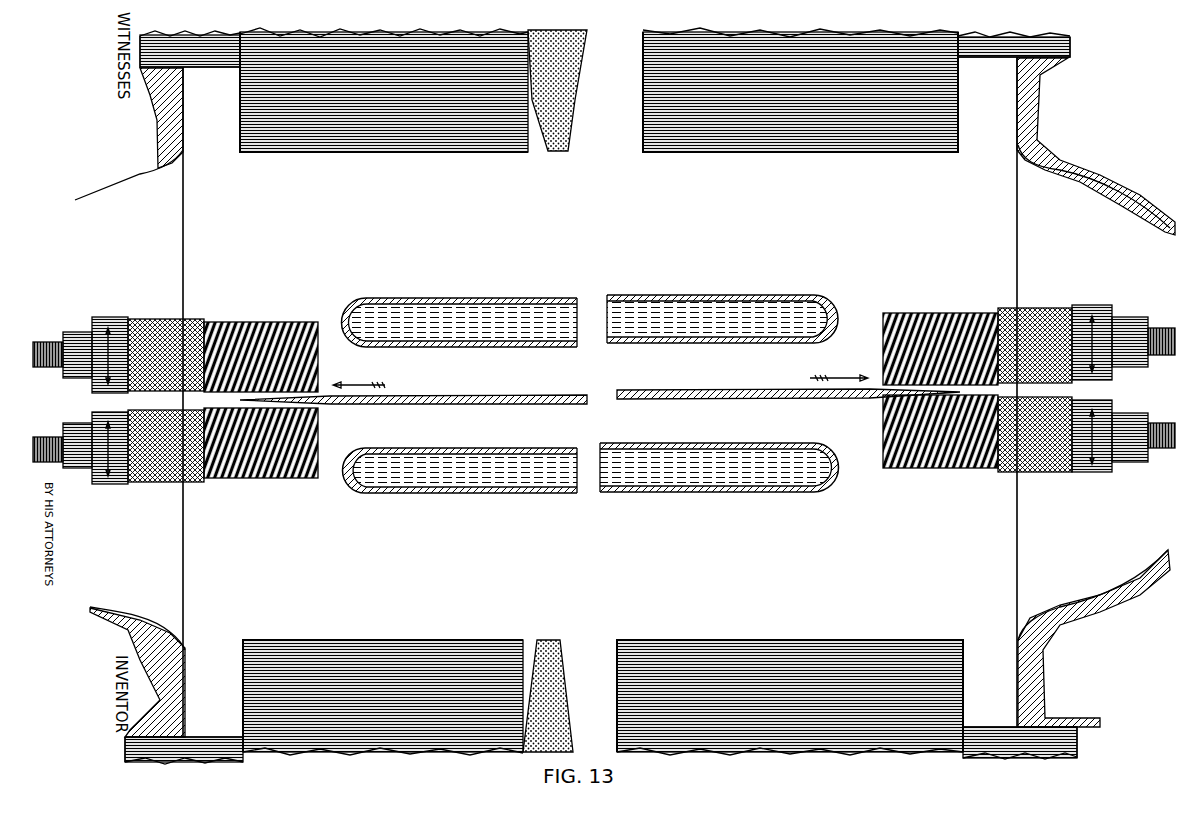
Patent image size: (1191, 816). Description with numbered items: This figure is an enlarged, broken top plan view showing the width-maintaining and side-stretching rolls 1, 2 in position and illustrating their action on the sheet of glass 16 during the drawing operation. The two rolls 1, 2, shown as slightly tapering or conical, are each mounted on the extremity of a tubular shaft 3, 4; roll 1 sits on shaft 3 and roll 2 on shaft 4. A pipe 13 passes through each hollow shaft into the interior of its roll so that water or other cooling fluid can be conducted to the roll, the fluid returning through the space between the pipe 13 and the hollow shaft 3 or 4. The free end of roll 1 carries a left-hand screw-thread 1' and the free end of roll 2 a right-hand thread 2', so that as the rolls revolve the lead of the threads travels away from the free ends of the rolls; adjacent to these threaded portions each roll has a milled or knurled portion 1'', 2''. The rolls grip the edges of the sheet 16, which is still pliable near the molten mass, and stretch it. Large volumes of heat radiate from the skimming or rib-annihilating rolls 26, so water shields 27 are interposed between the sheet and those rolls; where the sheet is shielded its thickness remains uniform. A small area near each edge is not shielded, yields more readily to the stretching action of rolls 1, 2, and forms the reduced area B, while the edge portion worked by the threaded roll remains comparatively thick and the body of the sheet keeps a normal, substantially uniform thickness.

The roll 1 is at (602, 330).
The left-hand screw-thread 1' is at (601, 329).
The knurled portion 1'' is at (600, 329).
The roll 2 is at (602, 470).
The right-hand screw-thread 2' is at (601, 467).
The knurled portion 2'' is at (600, 468).
The tubular shaft 3 is at (78, 332).
The tubular shaft 4 is at (75, 432).
The pipe 13 is at (45, 342).
The sheet of glass 16 is at (618, 402).
The skimming or rib-annihilating roll 26 is at (565, 152).
The water shield 27 is at (392, 298).
The reduced area B is at (345, 405).